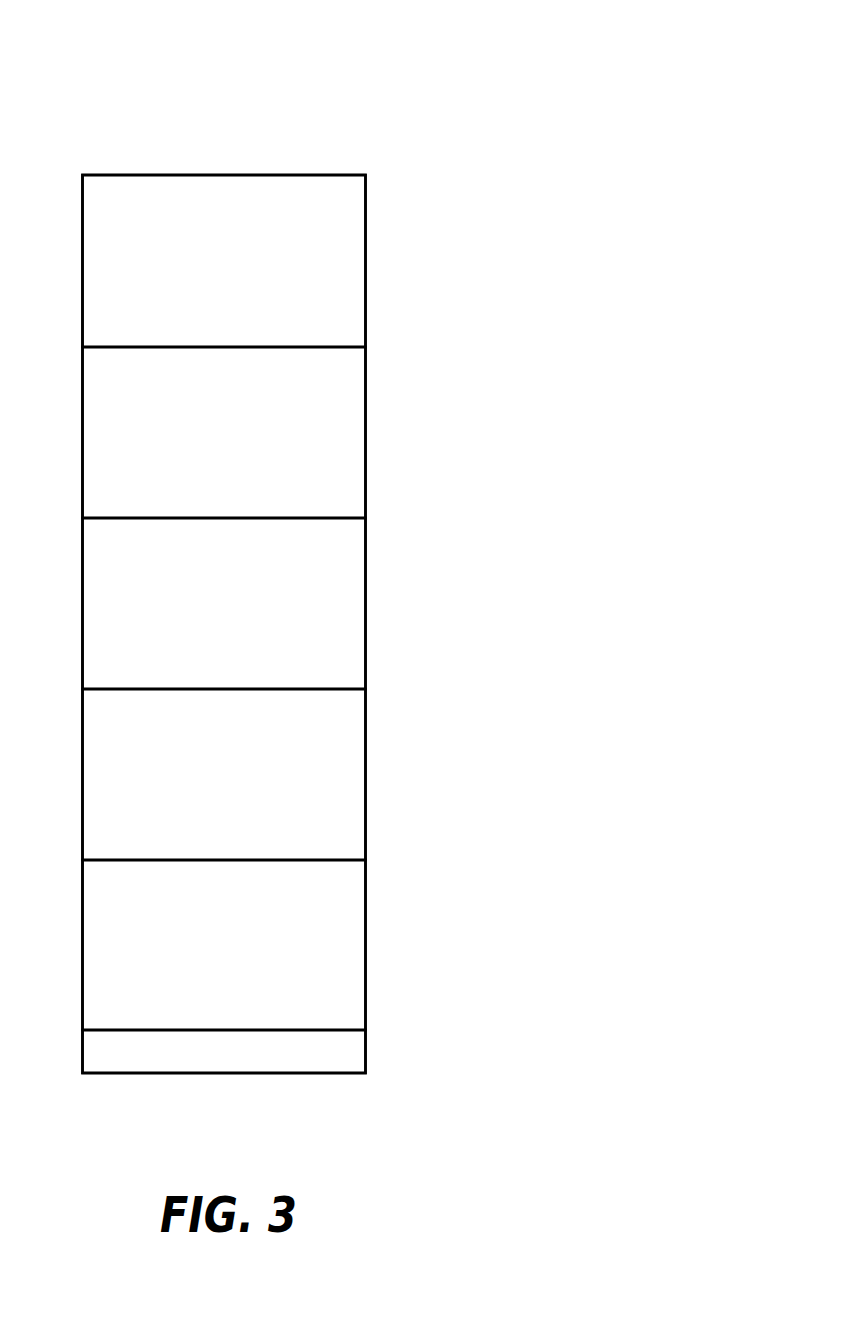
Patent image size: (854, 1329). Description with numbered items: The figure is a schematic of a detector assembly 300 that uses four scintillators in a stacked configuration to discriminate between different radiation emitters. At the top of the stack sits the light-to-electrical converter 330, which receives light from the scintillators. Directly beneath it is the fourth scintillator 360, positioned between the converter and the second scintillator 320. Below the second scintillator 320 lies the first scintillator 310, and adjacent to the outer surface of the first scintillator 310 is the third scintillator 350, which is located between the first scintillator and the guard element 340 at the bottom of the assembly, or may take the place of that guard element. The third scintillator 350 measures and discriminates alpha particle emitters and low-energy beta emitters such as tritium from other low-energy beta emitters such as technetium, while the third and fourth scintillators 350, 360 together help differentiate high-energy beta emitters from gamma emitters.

The detector assembly 300 is at (344, 128).
The light-to-electrical converter 330 is at (248, 275).
The fourth scintillator 360 is at (248, 446).
The second scintillator 320 is at (248, 617).
The first scintillator 310 is at (248, 788).
The third scintillator 350 is at (248, 959).
The guard element 340 is at (367, 1050).